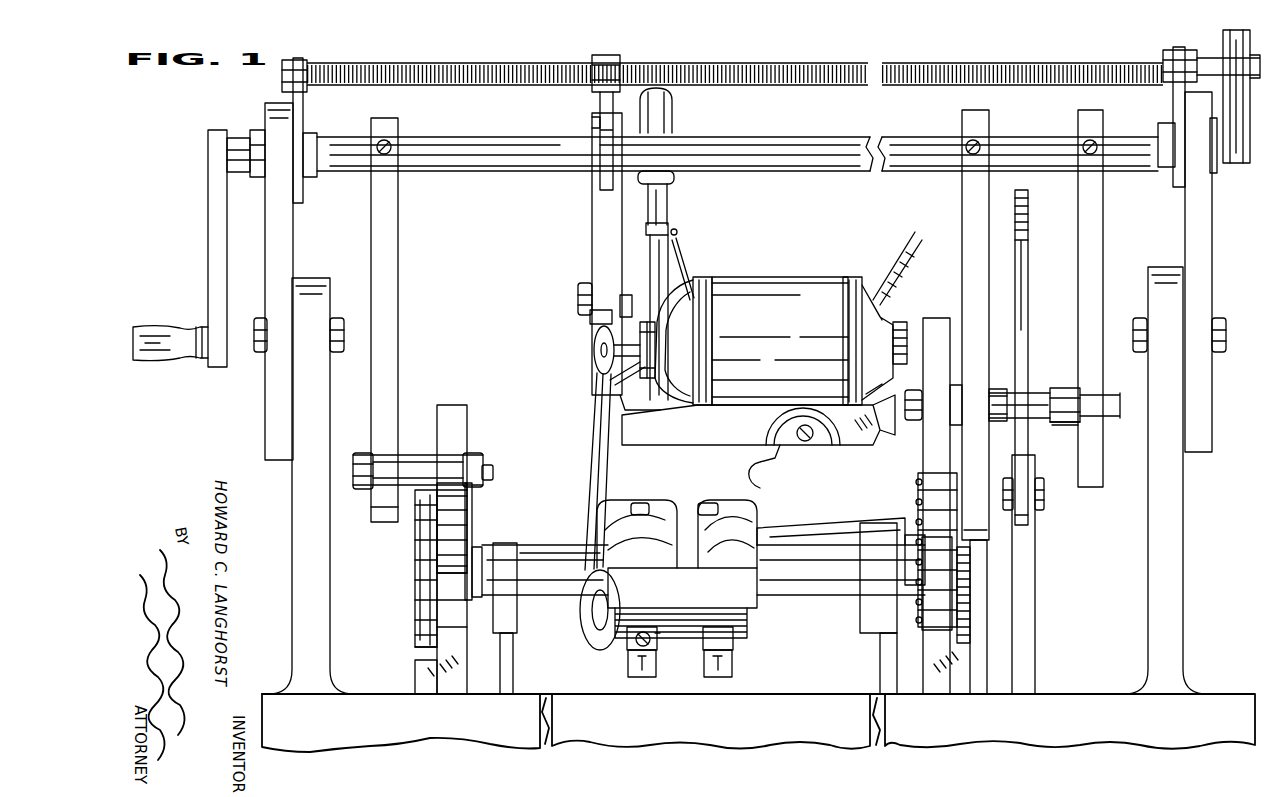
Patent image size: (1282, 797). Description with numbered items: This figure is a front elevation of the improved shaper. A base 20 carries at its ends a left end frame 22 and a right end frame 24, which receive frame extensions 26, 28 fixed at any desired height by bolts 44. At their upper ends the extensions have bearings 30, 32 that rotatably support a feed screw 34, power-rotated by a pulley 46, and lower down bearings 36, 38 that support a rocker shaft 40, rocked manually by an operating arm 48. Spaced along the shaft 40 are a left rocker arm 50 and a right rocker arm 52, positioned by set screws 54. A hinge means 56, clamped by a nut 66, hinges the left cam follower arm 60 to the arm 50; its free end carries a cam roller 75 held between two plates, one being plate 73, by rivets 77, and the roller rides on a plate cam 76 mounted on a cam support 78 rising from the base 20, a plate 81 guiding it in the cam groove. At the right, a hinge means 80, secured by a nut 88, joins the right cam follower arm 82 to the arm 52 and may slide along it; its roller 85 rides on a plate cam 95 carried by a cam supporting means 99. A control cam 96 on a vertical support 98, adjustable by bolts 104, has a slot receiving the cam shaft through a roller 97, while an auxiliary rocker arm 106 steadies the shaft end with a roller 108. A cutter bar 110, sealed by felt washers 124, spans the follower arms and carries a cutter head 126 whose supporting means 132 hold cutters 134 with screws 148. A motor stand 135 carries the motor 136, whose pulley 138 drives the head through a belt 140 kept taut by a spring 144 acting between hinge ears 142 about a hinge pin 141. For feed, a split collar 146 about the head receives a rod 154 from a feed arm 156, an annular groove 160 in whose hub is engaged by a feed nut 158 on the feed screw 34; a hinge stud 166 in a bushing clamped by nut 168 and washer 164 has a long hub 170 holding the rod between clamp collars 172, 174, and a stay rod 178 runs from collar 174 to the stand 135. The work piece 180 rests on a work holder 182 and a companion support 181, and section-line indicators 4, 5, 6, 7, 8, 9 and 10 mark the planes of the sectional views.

The base 20 is at (745, 740).
The left end frame 22 is at (320, 640).
The right end frame 24 is at (1150, 640).
The frame extension 26 is at (265, 420).
The frame extension 28 is at (1214, 422).
The bearing 30 is at (283, 78).
The bearing 32 is at (1184, 55).
The feed screw 34 is at (797, 63).
The bearing 36 is at (258, 180).
The bearing 38 is at (1170, 172).
The rocker shaft 40 is at (460, 138).
The bolts 44 is at (260, 355).
The pulley 46 is at (1250, 140).
The operating arm 48 is at (210, 262).
The left rocker arm 50 is at (398, 200).
The right rocker arm 52 is at (962, 190).
The set screws 54 is at (390, 146).
The hinge means 56 is at (477, 448).
The left cam follower arm 60 is at (467, 412).
The nut 66 is at (358, 482).
The plate 73 is at (471, 506).
The cam roller 75 is at (466, 632).
The plate cam 76 is at (418, 555).
The rivets 77 is at (478, 525).
The cam support 78 is at (418, 672).
The hinge means 80 is at (1044, 366).
The plate 81 is at (692, 668).
The right cam follower arm 82 is at (925, 320).
The roller 85 is at (896, 630).
The nut 88 is at (920, 426).
The plate cam 95 is at (972, 622).
The plate cam 96 is at (1027, 280).
The roller 97 is at (1053, 392).
The vertical support 98 is at (1030, 612).
The cam supporting means 99 is at (990, 670).
The bolts 104 is at (1040, 502).
The auxiliary rocker arm 106 is at (1082, 225).
The roller 108 is at (1060, 424).
The cutter bar 110 is at (545, 588).
The felt washers 124 is at (486, 545).
The cutter head 126 is at (686, 491).
The supporting means 132 is at (734, 640).
The cutters 134 is at (734, 660).
The motor stand 135 is at (779, 470).
The motor 136 is at (770, 277).
The pulley 138 is at (594, 352).
The belt 140 is at (590, 396).
The hinge pin 141 is at (806, 448).
The hinge ears 142 is at (852, 448).
The spring 144 is at (765, 420).
The split collar 146 is at (680, 644).
The screws 148 is at (718, 500).
The rod 154 is at (668, 208).
The feed arm 156 is at (592, 222).
The feed nut 158 is at (622, 64).
The annular groove 160 is at (592, 123).
The washer 164 is at (590, 320).
The hinge stud 166 is at (634, 288).
The nut 168 is at (580, 283).
The long hub 170 is at (672, 254).
The clamp collar 172 is at (635, 393).
The clamp collar 174 is at (680, 234).
The stay rod 178 is at (686, 292).
The work piece 180 is at (820, 540).
The support post 181 is at (515, 680).
The work holder 182 is at (888, 668).
The section line 4- 4 is at (345, 115).
The section line 5- 5 is at (553, 120).
The section line 6- 6 is at (937, 335).
The section line 7- 7 is at (975, 190).
The section line 8- 8 is at (1012, 183).
The section line 9- 9 is at (500, 471).
The section line 10- 10 is at (1128, 411).